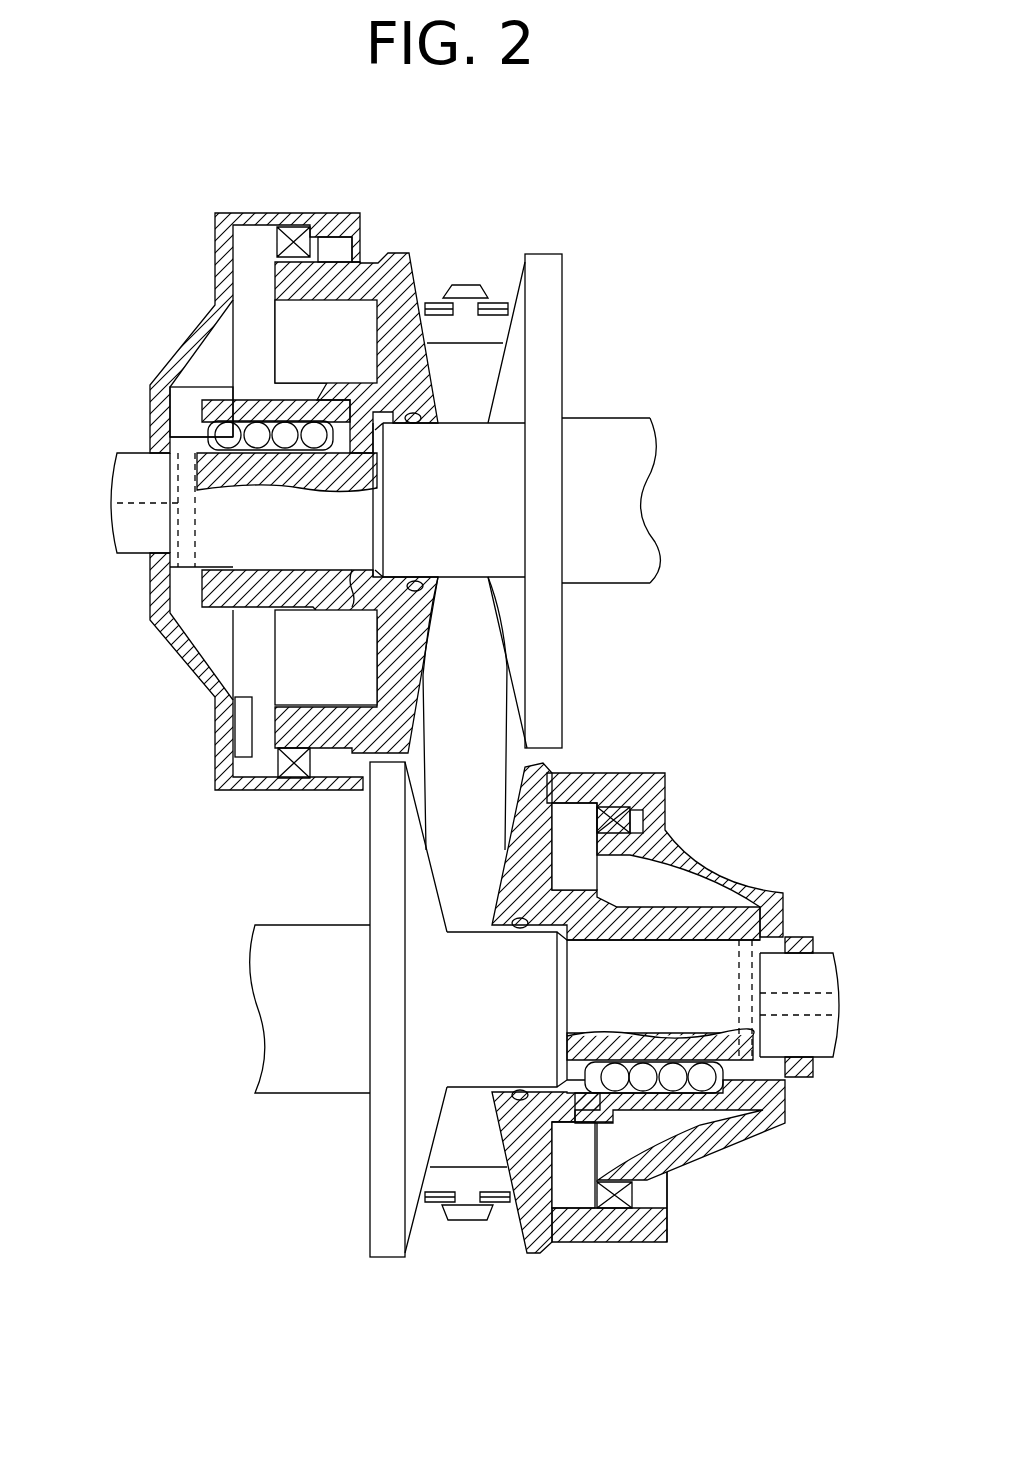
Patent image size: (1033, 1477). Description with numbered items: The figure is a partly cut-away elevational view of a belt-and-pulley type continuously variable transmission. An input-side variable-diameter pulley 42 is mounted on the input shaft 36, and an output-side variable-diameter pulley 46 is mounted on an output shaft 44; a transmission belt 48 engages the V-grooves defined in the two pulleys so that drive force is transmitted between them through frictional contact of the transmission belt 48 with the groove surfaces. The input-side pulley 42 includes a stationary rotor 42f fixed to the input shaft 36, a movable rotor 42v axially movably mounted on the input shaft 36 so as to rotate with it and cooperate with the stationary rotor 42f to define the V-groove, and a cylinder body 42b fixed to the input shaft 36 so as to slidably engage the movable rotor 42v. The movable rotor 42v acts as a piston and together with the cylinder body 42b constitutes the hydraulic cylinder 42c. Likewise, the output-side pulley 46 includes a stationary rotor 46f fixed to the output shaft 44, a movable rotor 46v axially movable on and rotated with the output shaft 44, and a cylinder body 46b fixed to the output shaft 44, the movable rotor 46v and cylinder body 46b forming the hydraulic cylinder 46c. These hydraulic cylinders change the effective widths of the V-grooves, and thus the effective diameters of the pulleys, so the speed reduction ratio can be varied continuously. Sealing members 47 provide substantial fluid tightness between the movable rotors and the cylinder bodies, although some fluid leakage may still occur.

The input shaft 36 is at (617, 424).
The input-side variable-diameter pulley 42 is at (430, 703).
The stationary rotor 42f is at (555, 300).
The movable rotor 42v is at (393, 258).
The cylinder body 42b is at (155, 430).
The input-side hydraulic cylinder 42c is at (220, 368).
The output shaft 44 is at (270, 936).
The output-side variable-diameter pulley 46 is at (517, 1050).
The stationary rotor 46f is at (380, 1167).
The movable rotor 46v is at (619, 1030).
The cylinder body 46b is at (783, 905).
The output-side hydraulic cylinder 46c is at (683, 1123).
The sealing members 47 is at (285, 242).
The transmission belt 48 is at (487, 697).